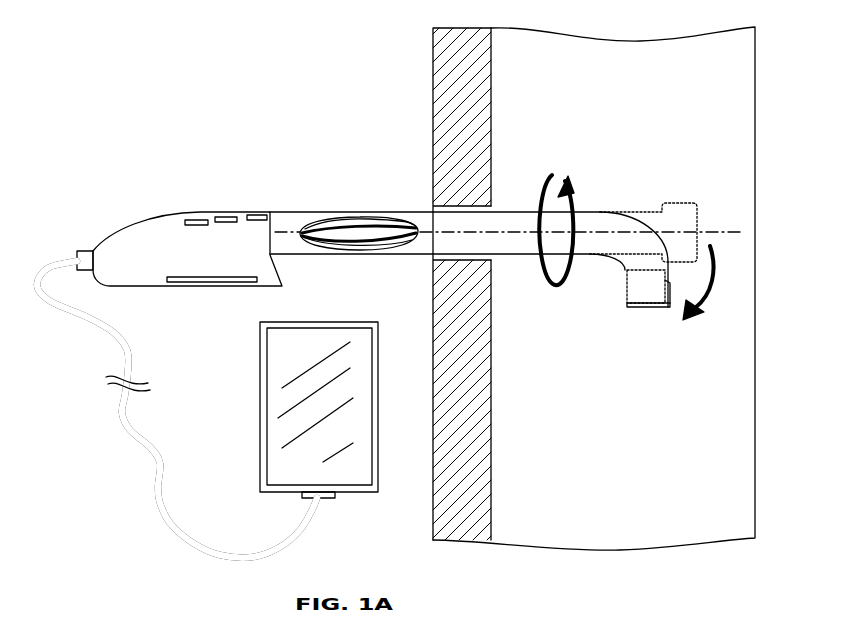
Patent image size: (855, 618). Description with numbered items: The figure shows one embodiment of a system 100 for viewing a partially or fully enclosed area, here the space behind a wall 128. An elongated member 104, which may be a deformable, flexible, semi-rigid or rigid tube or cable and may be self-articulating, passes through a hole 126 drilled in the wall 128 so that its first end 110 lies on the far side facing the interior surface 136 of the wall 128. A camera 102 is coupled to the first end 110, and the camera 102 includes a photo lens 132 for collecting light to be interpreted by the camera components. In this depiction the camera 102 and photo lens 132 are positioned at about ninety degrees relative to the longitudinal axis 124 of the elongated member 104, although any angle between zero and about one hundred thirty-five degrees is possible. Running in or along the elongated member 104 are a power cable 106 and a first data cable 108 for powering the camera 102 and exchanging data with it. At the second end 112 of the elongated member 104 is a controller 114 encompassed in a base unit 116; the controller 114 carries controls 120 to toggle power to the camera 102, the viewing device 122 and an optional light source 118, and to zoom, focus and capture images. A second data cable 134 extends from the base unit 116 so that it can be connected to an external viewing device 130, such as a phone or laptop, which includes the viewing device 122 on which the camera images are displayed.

The system 100 is at (164, 84).
The camera 102 is at (663, 297).
The elongated member 104 is at (502, 257).
The power cable 106 is at (387, 243).
The first data cable 108 is at (393, 223).
The first end 110 is at (643, 200).
The second end 112 is at (307, 198).
The controller 114 is at (142, 257).
The base unit 116 is at (235, 260).
The light source 118 is at (683, 318).
The controls 120 is at (257, 213).
The viewing device 122 is at (293, 360).
The longitudinal axis 124 is at (740, 232).
The hole 126 is at (496, 201).
The wall 128 is at (478, 120).
The external viewing device 130 is at (358, 502).
The photo lens 132 is at (627, 310).
The second data cable 134 is at (117, 417).
The interior surface 136 is at (493, 465).